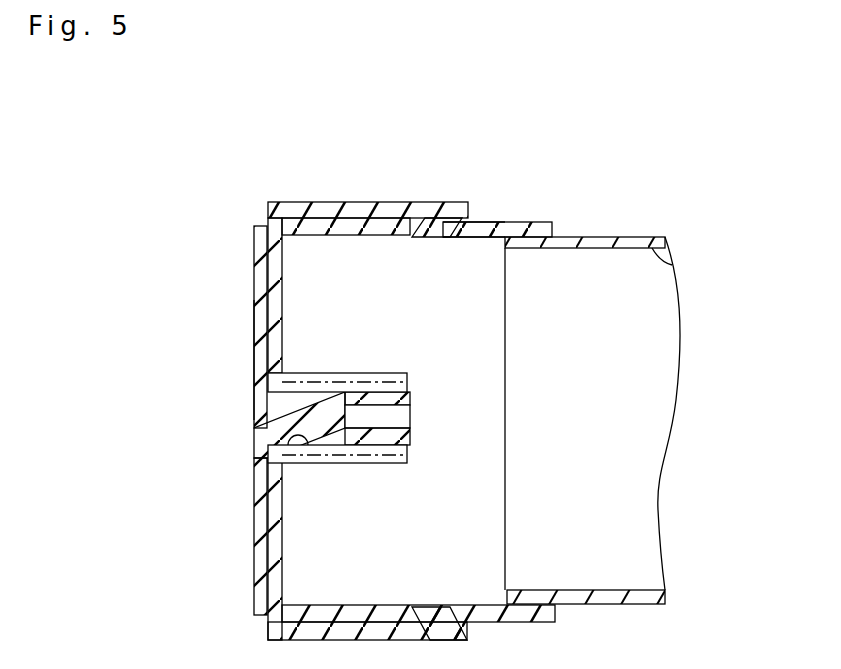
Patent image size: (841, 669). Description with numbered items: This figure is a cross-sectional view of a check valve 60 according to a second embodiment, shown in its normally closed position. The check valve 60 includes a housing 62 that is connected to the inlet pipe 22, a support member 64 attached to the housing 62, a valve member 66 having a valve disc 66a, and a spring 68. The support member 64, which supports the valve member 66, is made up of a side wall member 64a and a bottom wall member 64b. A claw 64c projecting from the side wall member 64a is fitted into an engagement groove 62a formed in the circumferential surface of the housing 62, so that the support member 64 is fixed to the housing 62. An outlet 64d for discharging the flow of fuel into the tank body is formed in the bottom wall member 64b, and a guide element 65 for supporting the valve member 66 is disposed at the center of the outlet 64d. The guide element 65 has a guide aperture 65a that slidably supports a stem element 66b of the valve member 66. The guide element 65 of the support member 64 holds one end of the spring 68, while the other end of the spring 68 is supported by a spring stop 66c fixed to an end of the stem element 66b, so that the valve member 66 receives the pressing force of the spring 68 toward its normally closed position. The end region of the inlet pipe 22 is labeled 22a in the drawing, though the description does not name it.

The inlet pipe 22 is at (623, 237).
The end portion of tube 22a is at (672, 265).
The check valve 60 is at (514, 192).
The housing 62 is at (530, 222).
The engagement groove 62a is at (470, 210).
The support member 64 is at (373, 148).
The side wall member 64a is at (330, 200).
The bottom wall member 64b is at (268, 213).
The claw 64c is at (436, 212).
The outlet 64d is at (277, 583).
The guide element 65 is at (290, 375).
The guide aperture 65a is at (300, 450).
The valve member 66 is at (254, 295).
The valve disc 66a is at (251, 348).
The stem element 66b is at (272, 420).
The spring stop 66c is at (410, 385).
The spring 68 is at (355, 372).